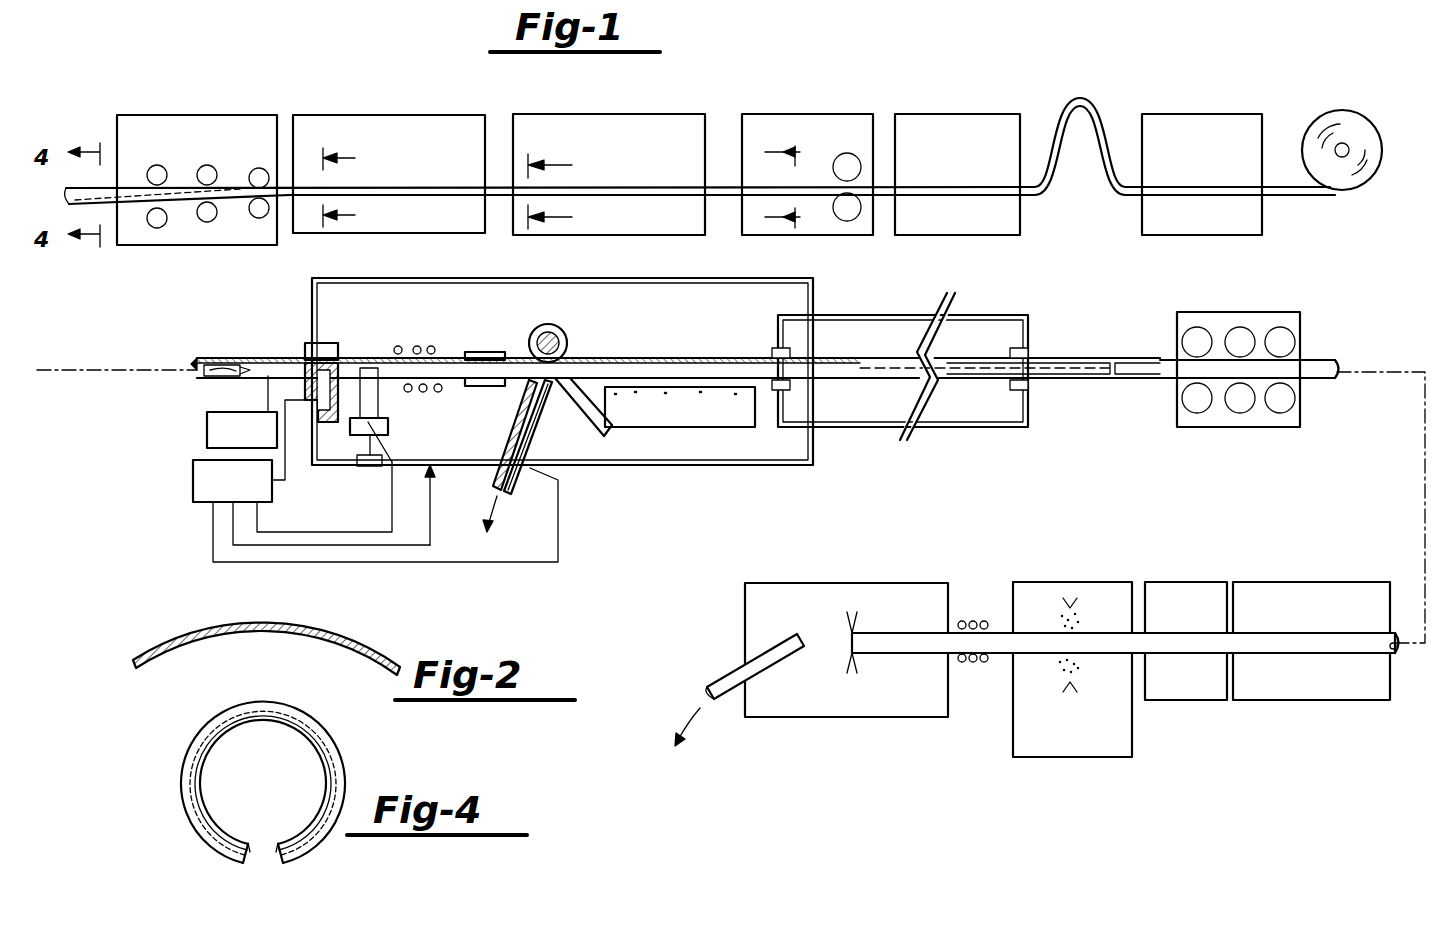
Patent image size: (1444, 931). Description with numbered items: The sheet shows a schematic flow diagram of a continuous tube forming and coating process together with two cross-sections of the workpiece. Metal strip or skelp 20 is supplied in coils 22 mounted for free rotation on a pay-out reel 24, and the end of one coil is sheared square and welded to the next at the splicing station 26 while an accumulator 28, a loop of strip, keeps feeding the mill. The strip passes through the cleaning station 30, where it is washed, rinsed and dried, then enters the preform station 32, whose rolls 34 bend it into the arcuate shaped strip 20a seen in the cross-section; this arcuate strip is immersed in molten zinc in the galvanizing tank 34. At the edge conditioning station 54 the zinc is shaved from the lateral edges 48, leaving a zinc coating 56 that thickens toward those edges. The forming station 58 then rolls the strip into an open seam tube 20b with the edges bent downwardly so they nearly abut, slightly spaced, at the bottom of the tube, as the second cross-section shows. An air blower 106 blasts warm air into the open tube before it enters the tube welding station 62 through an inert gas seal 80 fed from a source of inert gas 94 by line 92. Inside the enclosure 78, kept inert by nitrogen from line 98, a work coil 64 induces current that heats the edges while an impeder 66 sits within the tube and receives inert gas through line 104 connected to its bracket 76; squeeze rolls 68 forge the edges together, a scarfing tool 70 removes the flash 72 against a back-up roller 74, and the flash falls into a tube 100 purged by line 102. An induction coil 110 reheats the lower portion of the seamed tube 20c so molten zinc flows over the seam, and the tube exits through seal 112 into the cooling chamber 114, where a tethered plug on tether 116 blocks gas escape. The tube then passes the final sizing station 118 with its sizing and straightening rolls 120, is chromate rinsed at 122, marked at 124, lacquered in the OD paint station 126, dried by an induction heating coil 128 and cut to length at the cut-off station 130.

In FIG. 1, the metal strip 20 is at (1108, 194).
In FIG. 2, the arcuate shaped strip 20a is at (200, 632).
In FIG. 1, the open seam tube 20b is at (228, 383).
In FIG. 4, the open seam tube 20b is at (362, 779).
In FIG. 1, the seamed tube 20c is at (680, 358).
In FIG. 1, the coils 22 is at (1338, 128).
In FIG. 1, the pay-out reel 24 is at (1348, 146).
In FIG. 1, the splicing station 26 is at (1213, 235).
In FIG. 1, the accumulator 28 is at (1098, 65).
In FIG. 1, the cleaning station 30 is at (930, 114).
In FIG. 1, the preform station 32 is at (799, 114).
In FIG. 1, the galvanizing tank 34 is at (596, 114).
In FIG. 4, the lateral edges 48 is at (265, 850).
In FIG. 1, the edge conditioning station 54 is at (414, 115).
In FIG. 4, the zinc coating 56 is at (207, 724).
In FIG. 1, the forming station 58 is at (199, 115).
In FIG. 1, the tube welding station 62 is at (303, 293).
In FIG. 1, the work coil 64 is at (418, 346).
In FIG. 1, the impeder 66 is at (382, 368).
In FIG. 1, the squeeze rolls 68 is at (498, 352).
In FIG. 1, the scarfing tool 70 is at (573, 428).
In FIG. 1, the flash 72 is at (509, 496).
In FIG. 1, the back-up roller 74 is at (560, 325).
In FIG. 1, the clamp 76 is at (372, 393).
In FIG. 1, the enclosure 78 is at (717, 466).
In FIG. 1, the inert gas seal 80 is at (302, 346).
In FIG. 1, the line 92 is at (290, 465).
In FIG. 1, the source of inert gas 94 is at (193, 482).
In FIG. 1, the line 98 is at (416, 546).
In FIG. 1, the tube 100 is at (516, 430).
In FIG. 1, the line 102 is at (492, 562).
In FIG. 1, the line 104 is at (298, 533).
In FIG. 1, the air blower 106 is at (207, 432).
In FIG. 1, the induction coil 110 is at (680, 407).
In FIG. 1, the seal 112 is at (790, 387).
In FIG. 1, the cooling chamber 114 is at (955, 300).
In FIG. 1, the tether 116 is at (1062, 376).
In FIG. 1, the final sizing station 118 is at (1243, 312).
In FIG. 1, the sizing and straightening rolls 120 is at (1236, 401).
In FIG. 1, the chromate rinse station 122 is at (1318, 582).
In FIG. 1, the marking station 124 is at (1196, 582).
In FIG. 1, the OD paint station 126 is at (1081, 582).
In FIG. 1, the induction heating coil 128 is at (974, 664).
In FIG. 1, the cut-off station 130 is at (812, 583).